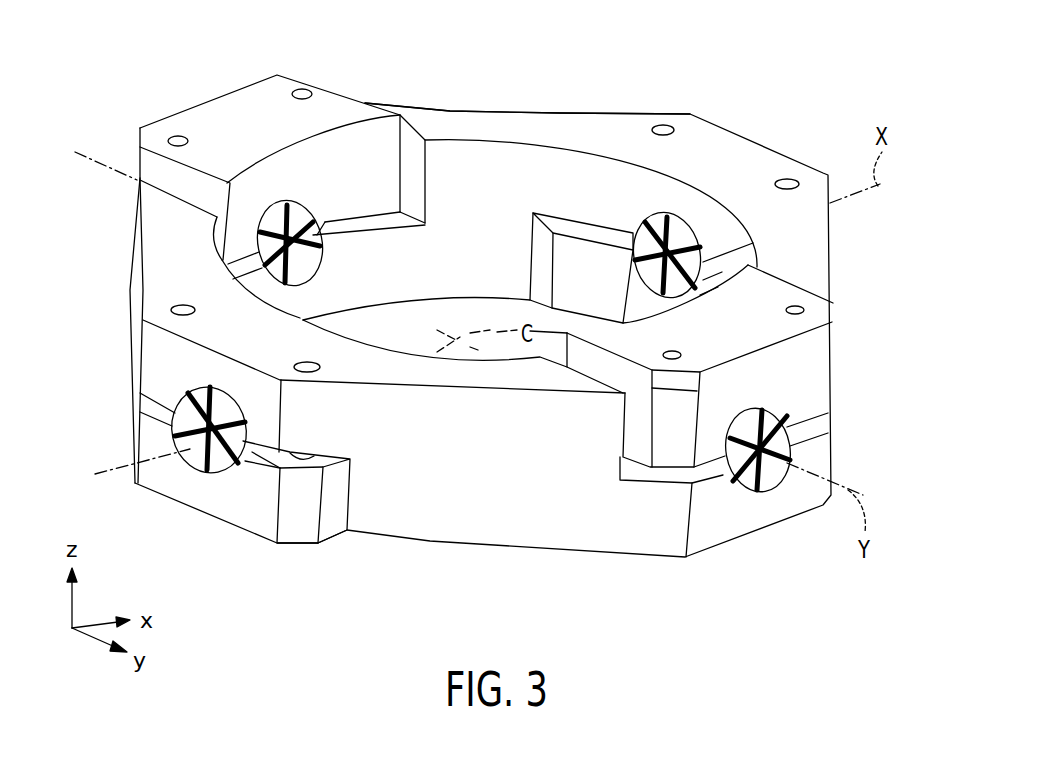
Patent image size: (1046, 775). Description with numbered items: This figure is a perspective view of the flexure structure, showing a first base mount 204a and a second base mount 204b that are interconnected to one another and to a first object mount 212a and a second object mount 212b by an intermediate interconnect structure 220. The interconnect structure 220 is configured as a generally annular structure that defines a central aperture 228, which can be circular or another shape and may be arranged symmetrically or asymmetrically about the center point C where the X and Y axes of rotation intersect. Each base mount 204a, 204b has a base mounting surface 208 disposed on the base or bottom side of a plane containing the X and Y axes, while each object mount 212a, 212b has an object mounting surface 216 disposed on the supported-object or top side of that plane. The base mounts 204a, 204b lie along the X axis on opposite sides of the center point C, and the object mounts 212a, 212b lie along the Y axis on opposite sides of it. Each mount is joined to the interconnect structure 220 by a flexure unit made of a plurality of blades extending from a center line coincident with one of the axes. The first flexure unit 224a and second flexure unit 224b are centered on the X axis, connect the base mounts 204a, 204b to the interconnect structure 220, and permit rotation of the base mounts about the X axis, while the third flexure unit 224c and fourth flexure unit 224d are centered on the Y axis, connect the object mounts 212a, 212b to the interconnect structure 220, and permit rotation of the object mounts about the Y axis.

The first base mount 204a is at (598, 250).
The second base mount 204b is at (137, 477).
The base mounting surface 208 is at (232, 523).
The first object mount 212a is at (815, 363).
The second object mount 212b is at (332, 98).
The object mounting surface 216 is at (167, 127).
The interconnect structure 220 is at (448, 118).
The first flexure unit 224a is at (663, 242).
The second flexure unit 224b is at (198, 458).
The third flexure unit 224c is at (750, 473).
The fourth flexure unit 224d is at (280, 223).
The central aperture 228 is at (535, 153).